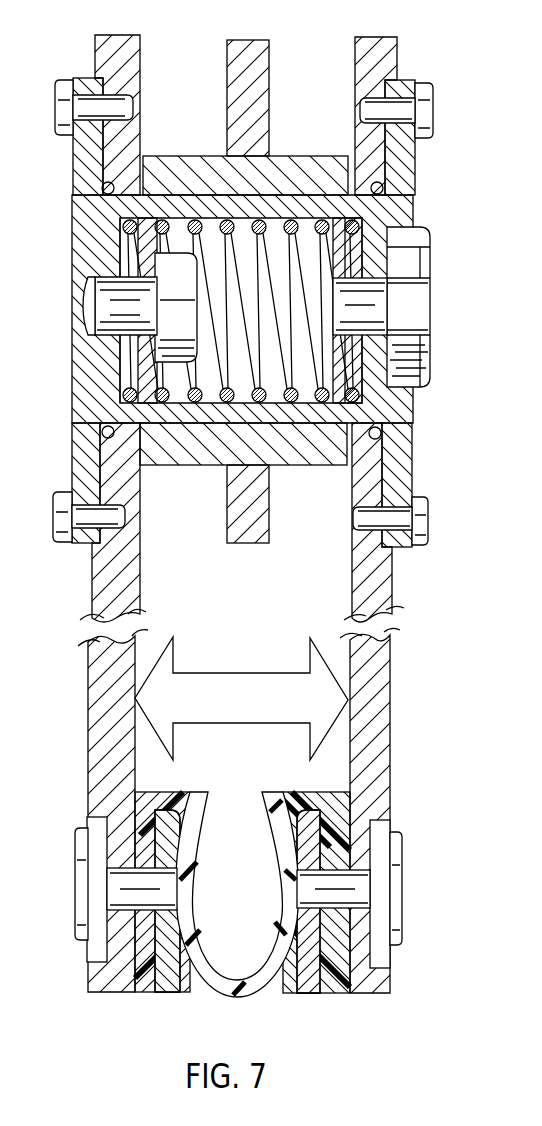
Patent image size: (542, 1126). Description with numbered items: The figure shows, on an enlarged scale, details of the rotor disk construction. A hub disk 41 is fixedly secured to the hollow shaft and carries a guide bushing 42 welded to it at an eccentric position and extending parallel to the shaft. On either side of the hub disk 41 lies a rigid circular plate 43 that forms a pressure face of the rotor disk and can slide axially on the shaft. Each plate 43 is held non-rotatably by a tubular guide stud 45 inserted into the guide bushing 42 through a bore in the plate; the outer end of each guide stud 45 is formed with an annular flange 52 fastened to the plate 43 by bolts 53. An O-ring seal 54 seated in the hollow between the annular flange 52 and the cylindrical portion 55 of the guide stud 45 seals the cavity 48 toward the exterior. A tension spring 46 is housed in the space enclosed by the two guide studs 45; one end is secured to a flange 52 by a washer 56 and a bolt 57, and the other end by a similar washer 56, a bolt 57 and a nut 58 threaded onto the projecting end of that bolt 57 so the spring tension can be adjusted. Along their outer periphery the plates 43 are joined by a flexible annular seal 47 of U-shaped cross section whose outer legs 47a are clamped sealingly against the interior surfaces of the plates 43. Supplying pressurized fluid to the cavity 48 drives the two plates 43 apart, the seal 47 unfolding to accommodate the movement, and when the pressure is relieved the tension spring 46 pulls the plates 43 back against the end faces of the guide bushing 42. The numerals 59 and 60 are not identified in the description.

The hub disk 41 is at (248, 66).
The guide bushing 42 is at (288, 172).
The circular plate 43 is at (132, 58).
The guide stud 45 is at (90, 380).
The tension spring 46 is at (330, 215).
The flexible annular seal 47 is at (275, 857).
The outer leg 47a is at (148, 968).
The cavity 48 is at (238, 617).
The annular flange 52 is at (76, 452).
The bolt 53 is at (70, 92).
The O-ring seal 54 is at (100, 180).
The cylindrical portion 55 is at (230, 398).
The washer 56 is at (130, 242).
The bolt 57 is at (110, 318).
The nut 58 is at (430, 270).
The pads 59 is at (173, 962).
The clamp bolts 60 is at (82, 872).